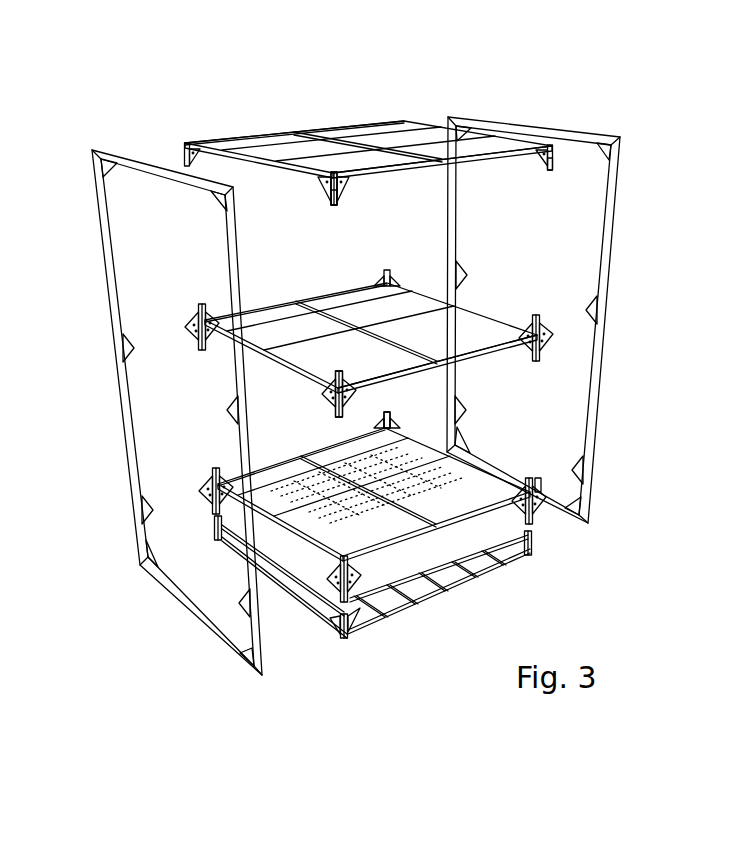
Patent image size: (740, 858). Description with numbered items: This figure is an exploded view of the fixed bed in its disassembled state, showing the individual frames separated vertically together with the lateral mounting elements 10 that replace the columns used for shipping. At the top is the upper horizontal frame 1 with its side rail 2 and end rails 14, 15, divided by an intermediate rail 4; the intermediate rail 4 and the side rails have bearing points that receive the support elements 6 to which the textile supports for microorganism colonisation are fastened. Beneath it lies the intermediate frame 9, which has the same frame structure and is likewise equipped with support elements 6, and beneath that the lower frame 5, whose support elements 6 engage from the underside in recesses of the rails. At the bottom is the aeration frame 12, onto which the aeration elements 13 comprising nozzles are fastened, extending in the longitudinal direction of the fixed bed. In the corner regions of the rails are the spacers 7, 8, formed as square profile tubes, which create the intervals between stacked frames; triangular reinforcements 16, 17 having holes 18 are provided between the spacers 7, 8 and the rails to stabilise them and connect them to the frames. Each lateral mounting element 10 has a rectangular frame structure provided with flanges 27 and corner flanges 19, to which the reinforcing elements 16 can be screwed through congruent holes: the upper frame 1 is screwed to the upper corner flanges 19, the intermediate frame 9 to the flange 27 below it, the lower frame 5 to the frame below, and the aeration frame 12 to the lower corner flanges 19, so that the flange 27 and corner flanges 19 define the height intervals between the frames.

The upper horizontal frame 1 is at (336, 114).
The side rail 2 is at (538, 127).
The intermediate rail 4 is at (313, 130).
The lower frame 5 is at (293, 451).
The support element 6 is at (265, 147).
The spacer 7 is at (388, 414).
The spacer 8 is at (334, 206).
The intermediate frame 9 is at (296, 292).
The lateral mounting element 10 is at (120, 406).
The aeration frame 12 is at (535, 542).
The aeration element 13 is at (407, 612).
The end rail 14 is at (492, 150).
The end rail 15 is at (239, 138).
The triangular reinforcement 16 is at (323, 178).
The triangular reinforcement 17 is at (347, 172).
The hole 18 is at (386, 270).
The corner flange 19 is at (99, 167).
The flange 27 is at (121, 349).